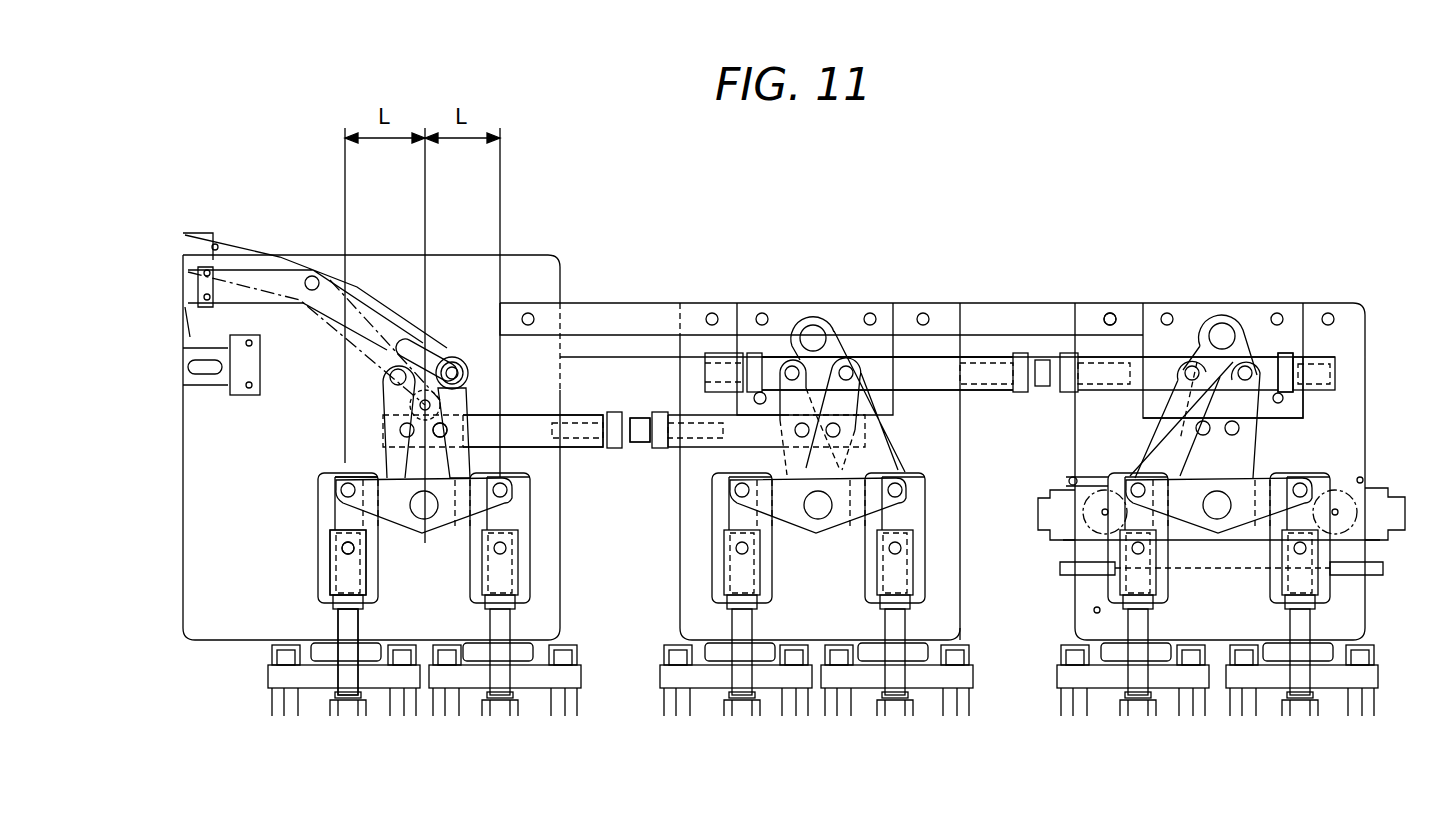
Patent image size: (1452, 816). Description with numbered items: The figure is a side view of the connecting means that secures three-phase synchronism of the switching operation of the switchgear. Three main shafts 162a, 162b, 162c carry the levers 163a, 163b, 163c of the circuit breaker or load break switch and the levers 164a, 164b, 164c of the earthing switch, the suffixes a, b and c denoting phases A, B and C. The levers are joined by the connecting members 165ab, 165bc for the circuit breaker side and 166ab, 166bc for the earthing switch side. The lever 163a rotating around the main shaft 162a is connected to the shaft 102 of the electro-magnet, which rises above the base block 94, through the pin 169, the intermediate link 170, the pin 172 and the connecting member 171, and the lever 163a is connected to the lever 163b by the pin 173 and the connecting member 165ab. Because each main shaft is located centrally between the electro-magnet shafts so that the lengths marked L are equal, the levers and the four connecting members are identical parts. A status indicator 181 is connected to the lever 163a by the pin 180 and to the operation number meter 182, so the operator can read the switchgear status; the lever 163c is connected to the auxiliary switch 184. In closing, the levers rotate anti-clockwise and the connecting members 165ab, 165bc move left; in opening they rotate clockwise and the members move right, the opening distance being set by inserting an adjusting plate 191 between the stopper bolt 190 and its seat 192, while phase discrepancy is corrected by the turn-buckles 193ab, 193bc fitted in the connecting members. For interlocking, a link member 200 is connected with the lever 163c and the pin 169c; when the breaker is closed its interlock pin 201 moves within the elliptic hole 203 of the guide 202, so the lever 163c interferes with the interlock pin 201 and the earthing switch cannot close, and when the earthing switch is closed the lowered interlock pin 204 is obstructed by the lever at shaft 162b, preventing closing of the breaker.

The base block 94 is at (268, 705).
The shaft of the electro-magnet 102 is at (352, 680).
The main shaft 162a is at (413, 510).
The main shaft 162b is at (816, 508).
The main shaft 162c is at (1280, 468).
The lever 163a is at (375, 476).
The lever 163b is at (820, 530).
The lever 163c is at (1180, 520).
The lever 164a is at (385, 410).
The lever 164b is at (786, 372).
The lever 164c is at (1178, 368).
The connecting member 165ab is at (585, 410).
The connecting member 166ab is at (568, 324).
The connecting member 165bc is at (985, 358).
The connecting member 166bc is at (899, 309).
The pin 169 is at (335, 472).
The pin 169c is at (1068, 480).
The intermediate link 170 is at (320, 497).
The connecting member 171 is at (330, 580).
The pin 172 is at (358, 550).
The pin 173 is at (450, 428).
The pin 180 is at (450, 357).
The status indicator 181 is at (260, 248).
The operation number meter 182 is at (188, 357).
The auxiliary switch 184 is at (1062, 520).
The stopper bolt 190 is at (1276, 355).
The adjusting plate 191 is at (740, 352).
The seat 192 is at (1285, 393).
The turn-buckle 193ab is at (637, 450).
The turn-buckle 193bc is at (1046, 398).
The link member 200 is at (1112, 345).
The interlock pin 201 is at (1225, 335).
The guide 202 is at (1295, 408).
The elliptic hole 203 is at (1208, 320).
The interlock pin 204 is at (820, 340).